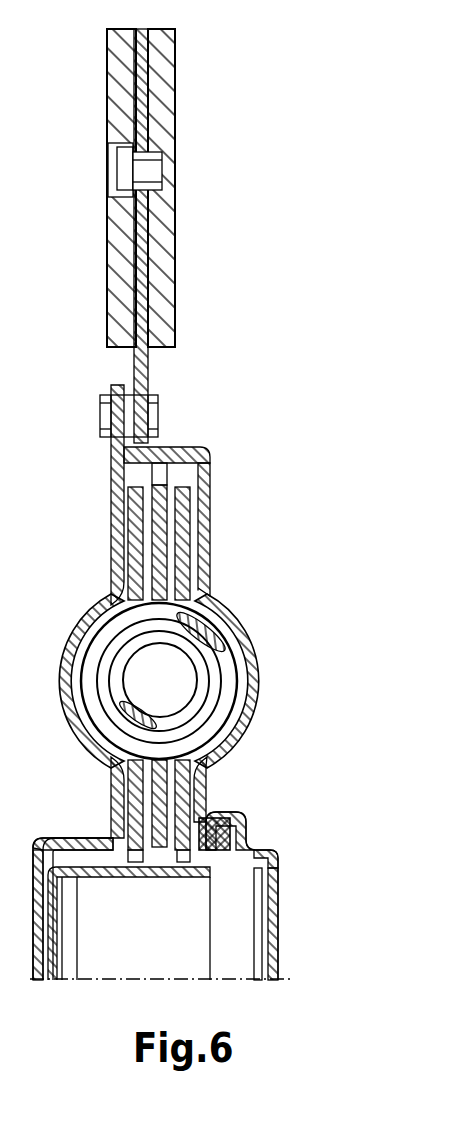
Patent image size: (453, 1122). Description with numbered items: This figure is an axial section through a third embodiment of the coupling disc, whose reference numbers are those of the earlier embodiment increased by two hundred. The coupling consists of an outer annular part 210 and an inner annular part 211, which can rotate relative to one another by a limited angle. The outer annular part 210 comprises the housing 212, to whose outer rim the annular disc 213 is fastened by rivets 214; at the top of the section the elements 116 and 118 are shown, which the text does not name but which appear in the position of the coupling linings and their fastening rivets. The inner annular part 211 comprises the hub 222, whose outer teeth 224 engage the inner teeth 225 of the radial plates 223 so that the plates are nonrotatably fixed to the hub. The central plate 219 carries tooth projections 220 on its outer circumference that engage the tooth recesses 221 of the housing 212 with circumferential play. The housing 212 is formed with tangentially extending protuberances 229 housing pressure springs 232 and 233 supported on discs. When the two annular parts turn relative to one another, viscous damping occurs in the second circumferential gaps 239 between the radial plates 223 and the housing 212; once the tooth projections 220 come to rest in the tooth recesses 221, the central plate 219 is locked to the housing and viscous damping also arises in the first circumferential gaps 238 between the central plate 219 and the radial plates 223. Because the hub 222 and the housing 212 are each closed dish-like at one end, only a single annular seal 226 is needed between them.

The valve housing block 116 is at (175, 90).
The nut in housing block 118 is at (163, 167).
The annular disc 213 is at (150, 372).
The rivets 214 is at (160, 410).
The outer annular part 210 is at (90, 548).
The housing 212 is at (200, 547).
The tooth projections 220 is at (208, 460).
The tooth recesses 221 is at (183, 483).
The central plate 219 is at (157, 522).
The first circumferential gaps 238 is at (170, 580).
The protuberances 229 is at (243, 630).
The pressure spring 233 is at (233, 665).
The pressure spring 232 is at (230, 698).
The second circumferential gaps 239 is at (210, 773).
The radial plates 223 is at (207, 795).
The annular seal 226 is at (250, 830).
The hub 222 is at (270, 877).
The inner annular part 211 is at (288, 940).
The outer teeth 224 is at (153, 868).
The inner teeth 225 is at (182, 868).